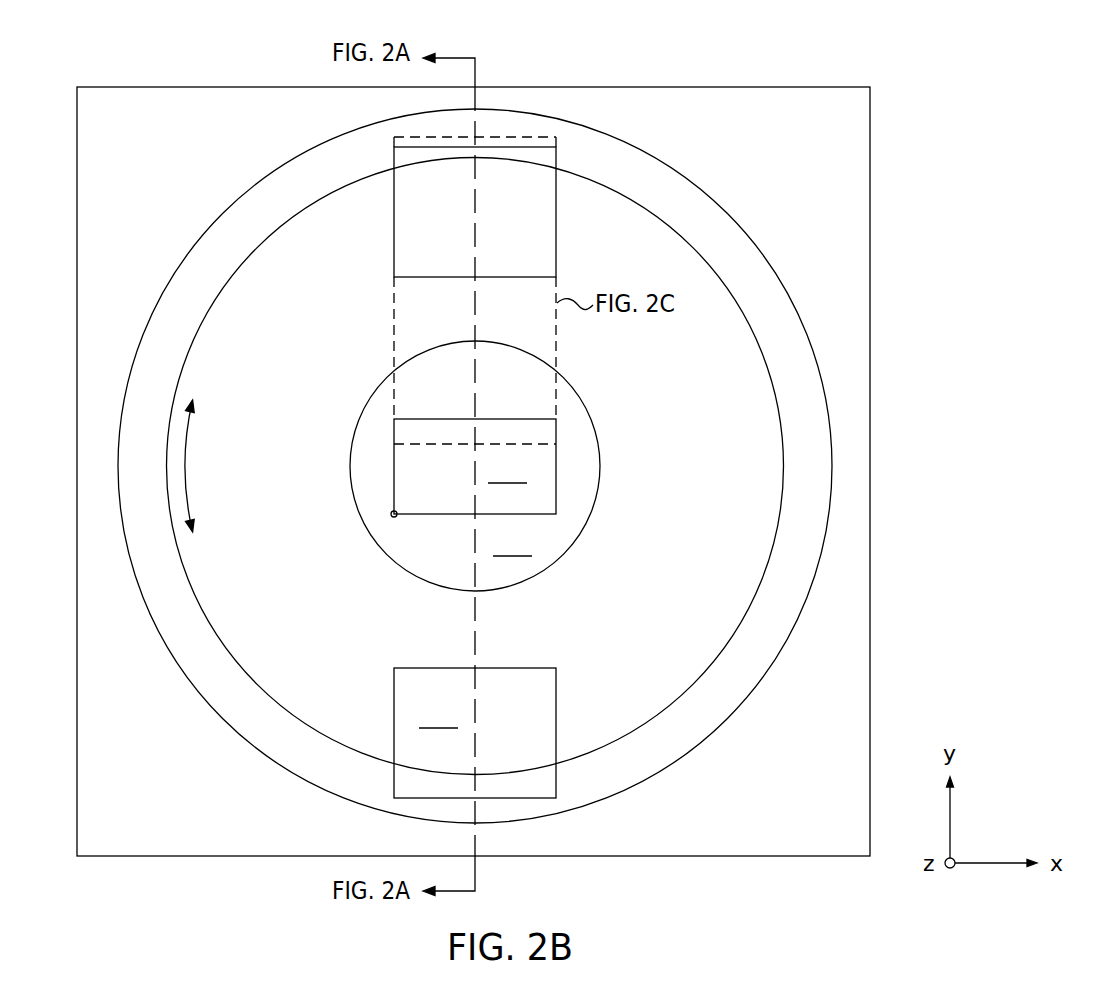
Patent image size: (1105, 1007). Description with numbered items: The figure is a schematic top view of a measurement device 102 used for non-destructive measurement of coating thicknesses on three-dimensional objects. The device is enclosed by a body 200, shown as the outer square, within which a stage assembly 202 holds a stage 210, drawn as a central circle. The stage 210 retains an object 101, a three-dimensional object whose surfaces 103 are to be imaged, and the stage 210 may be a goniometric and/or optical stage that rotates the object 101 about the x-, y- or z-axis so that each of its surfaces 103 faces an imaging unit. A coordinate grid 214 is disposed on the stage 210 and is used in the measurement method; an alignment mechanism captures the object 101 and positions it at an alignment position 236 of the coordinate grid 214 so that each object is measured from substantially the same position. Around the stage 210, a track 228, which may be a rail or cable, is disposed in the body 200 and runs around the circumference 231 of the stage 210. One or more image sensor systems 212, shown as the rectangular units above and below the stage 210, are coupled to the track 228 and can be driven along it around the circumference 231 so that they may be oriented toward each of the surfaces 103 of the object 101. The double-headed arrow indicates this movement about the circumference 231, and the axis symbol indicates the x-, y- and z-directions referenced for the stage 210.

The measurement device 102 is at (955, 108).
The body 200 is at (870, 273).
The track 228 is at (773, 542).
The circumference 231 is at (185, 470).
The stage 210 is at (384, 552).
The stage assembly 202 is at (580, 432).
The object 101 is at (557, 483).
The surfaces 103 is at (507, 469).
The coordinate grid 214 is at (512, 541).
The alignment position 236 is at (391, 513).
The image sensor system 212 is at (475, 733).